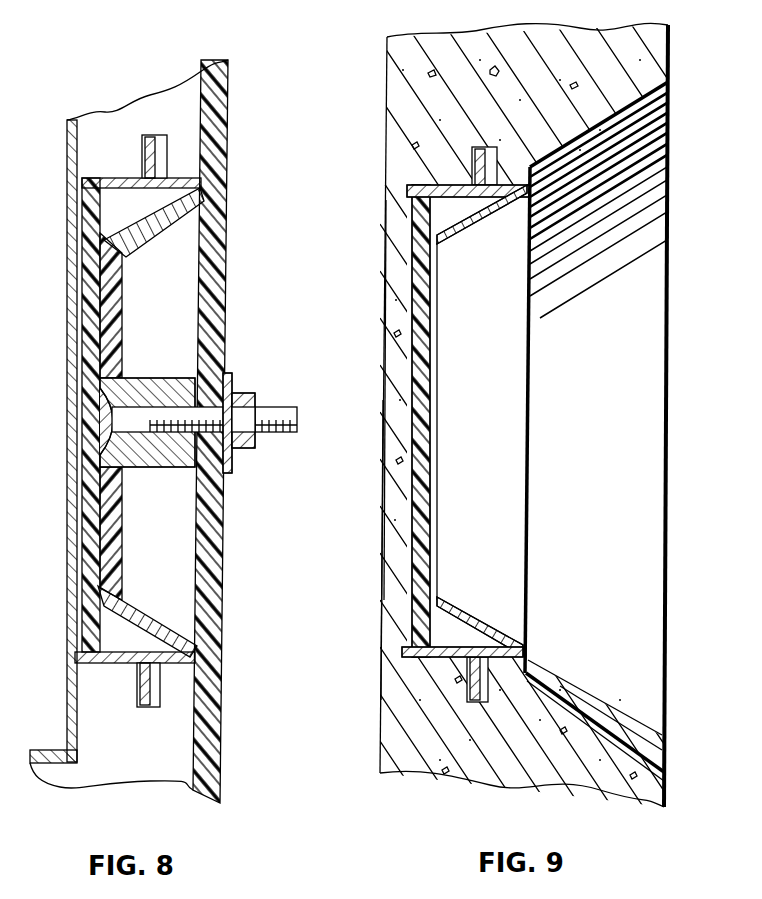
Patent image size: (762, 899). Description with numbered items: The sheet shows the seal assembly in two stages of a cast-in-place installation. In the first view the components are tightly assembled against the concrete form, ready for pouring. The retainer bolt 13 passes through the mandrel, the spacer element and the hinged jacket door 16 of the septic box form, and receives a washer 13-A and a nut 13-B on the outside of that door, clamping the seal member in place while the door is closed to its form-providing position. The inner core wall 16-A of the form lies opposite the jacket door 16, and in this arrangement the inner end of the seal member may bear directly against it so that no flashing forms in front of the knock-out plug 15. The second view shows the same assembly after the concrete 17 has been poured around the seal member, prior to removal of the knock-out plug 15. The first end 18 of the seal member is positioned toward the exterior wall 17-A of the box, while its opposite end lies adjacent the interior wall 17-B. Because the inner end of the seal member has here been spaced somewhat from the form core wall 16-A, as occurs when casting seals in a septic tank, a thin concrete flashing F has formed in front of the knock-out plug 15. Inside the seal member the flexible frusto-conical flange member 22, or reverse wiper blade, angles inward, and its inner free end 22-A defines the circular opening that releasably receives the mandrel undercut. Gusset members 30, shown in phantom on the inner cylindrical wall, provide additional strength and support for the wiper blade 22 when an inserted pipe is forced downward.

In FIG. 8, the retainer bolt 13 is at (288, 407).
In FIG. 8, the washer 13-A is at (229, 373).
In FIG. 8, the nut 13-B is at (255, 395).
In FIG. 8, the hinged jacket door 16 is at (218, 695).
In FIG. 8, the inner core wall 16-A is at (62, 727).
In FIG. 9, the knock-out plug 15 is at (413, 568).
In FIG. 9, the first end 18 is at (533, 192).
In FIG. 9, the gusset members 30 is at (533, 228).
In FIG. 9, the flange member 22 is at (473, 618).
In FIG. 9, the inner free end 22-A is at (430, 573).
In FIG. 9, the concrete 17 is at (647, 790).
In FIG. 9, the exterior wall 17-A is at (663, 745).
In FIG. 9, the interior wall 17-B is at (378, 683).
In FIG. 9, the concrete flashing F is at (390, 512).